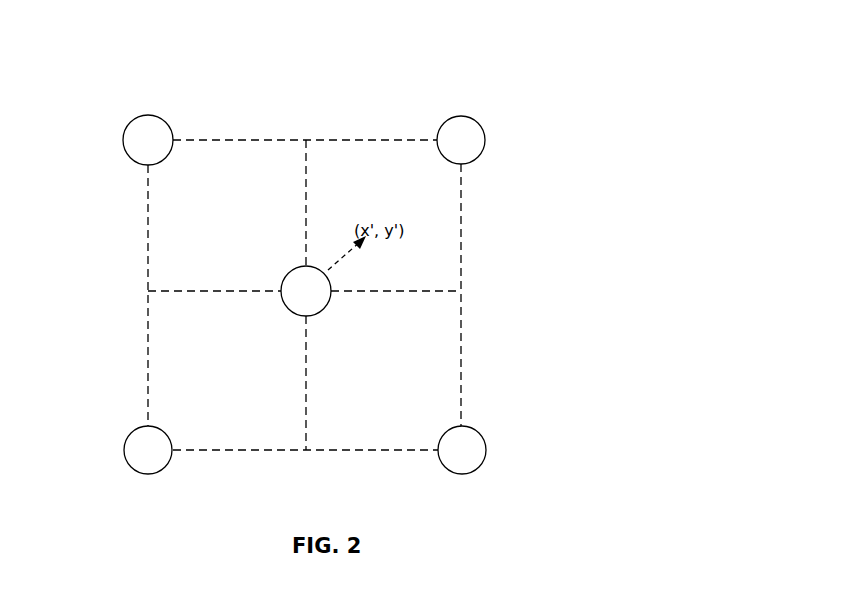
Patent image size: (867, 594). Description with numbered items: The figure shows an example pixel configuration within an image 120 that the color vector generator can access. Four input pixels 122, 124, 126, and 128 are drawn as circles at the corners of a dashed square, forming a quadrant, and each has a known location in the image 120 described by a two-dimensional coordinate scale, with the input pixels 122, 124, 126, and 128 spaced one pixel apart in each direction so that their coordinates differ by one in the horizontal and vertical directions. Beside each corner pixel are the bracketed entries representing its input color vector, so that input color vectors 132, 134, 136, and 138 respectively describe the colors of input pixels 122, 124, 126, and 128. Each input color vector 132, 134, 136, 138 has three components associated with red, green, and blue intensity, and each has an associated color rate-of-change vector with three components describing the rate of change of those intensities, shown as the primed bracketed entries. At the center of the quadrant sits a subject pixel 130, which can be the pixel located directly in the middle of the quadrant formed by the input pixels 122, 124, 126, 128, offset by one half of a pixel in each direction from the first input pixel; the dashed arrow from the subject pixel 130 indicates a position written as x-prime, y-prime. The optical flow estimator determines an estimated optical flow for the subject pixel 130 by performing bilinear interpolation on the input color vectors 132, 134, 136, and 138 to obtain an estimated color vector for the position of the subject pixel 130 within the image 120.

The image 120 is at (598, 102).
The input pixel 122 is at (128, 459).
The input pixel 124 is at (478, 468).
The input pixel 126 is at (128, 126).
The input pixel 128 is at (478, 122).
The subject pixel 130 is at (298, 288).
The input color vector 132 is at (93, 413).
The input color vector 134 is at (533, 420).
The input color vector 136 is at (82, 215).
The input color vector 138 is at (535, 170).